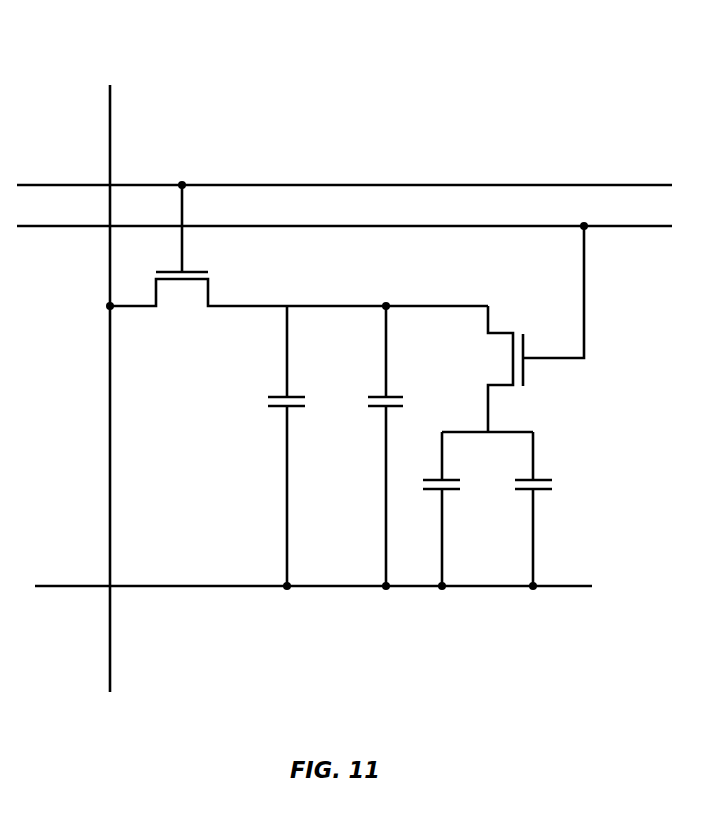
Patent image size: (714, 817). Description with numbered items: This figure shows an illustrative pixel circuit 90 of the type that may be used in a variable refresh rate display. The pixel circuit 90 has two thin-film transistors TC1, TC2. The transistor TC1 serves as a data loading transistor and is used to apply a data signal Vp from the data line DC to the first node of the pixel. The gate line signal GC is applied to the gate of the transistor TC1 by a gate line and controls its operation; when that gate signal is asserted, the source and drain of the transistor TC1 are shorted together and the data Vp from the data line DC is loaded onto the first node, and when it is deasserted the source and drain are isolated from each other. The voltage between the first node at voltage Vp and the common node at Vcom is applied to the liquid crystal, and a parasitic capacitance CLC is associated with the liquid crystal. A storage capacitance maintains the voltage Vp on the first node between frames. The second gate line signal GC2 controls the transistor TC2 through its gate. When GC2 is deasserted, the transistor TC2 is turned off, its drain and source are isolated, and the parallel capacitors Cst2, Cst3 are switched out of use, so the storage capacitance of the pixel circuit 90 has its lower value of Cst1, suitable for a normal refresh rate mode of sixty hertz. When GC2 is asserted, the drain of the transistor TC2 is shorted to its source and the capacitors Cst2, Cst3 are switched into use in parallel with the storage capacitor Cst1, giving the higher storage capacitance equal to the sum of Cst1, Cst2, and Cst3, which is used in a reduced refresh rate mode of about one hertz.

The pixel circuit 90 is at (526, 68).
The data line DC is at (128, 387).
The gate line signal GC is at (344, 174).
The gate line signal GC' GC2 is at (344, 238).
The thin-film transistor TC1 is at (203, 258).
The thin-film transistor TC2 is at (515, 329).
The storage capacitor Cst1 is at (261, 448).
The parasitic capacitance CLC is at (387, 450).
The storage capacitor Cst2 is at (478, 511).
The storage capacitor Cst3 is at (550, 511).
The common voltage Vcom is at (307, 573).